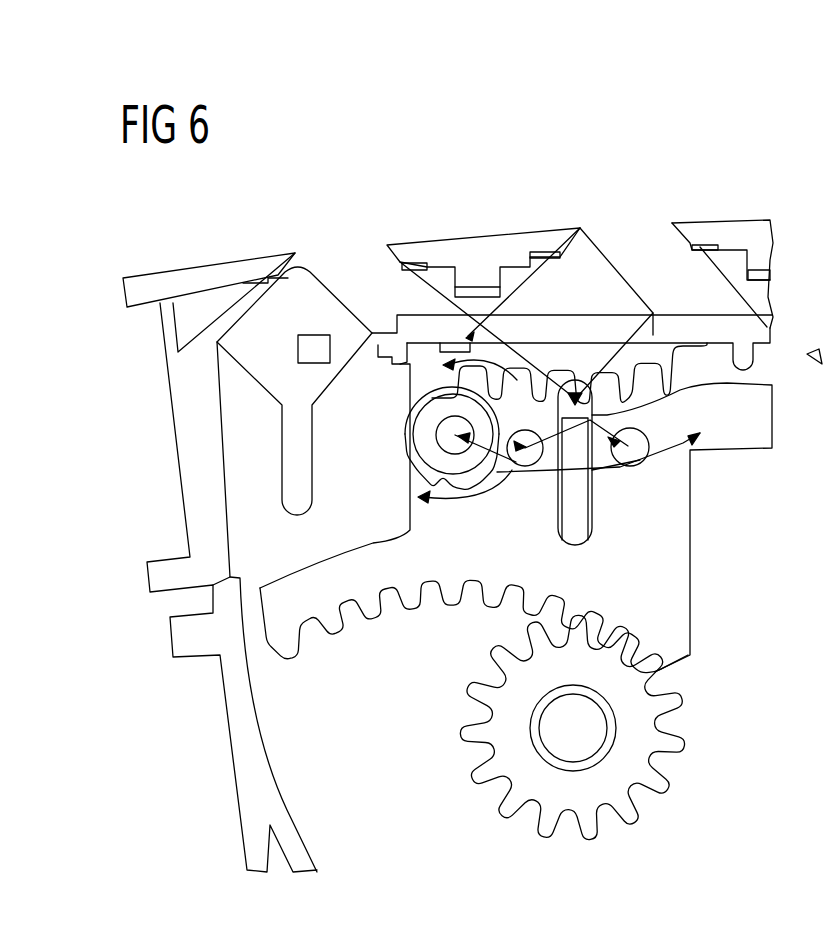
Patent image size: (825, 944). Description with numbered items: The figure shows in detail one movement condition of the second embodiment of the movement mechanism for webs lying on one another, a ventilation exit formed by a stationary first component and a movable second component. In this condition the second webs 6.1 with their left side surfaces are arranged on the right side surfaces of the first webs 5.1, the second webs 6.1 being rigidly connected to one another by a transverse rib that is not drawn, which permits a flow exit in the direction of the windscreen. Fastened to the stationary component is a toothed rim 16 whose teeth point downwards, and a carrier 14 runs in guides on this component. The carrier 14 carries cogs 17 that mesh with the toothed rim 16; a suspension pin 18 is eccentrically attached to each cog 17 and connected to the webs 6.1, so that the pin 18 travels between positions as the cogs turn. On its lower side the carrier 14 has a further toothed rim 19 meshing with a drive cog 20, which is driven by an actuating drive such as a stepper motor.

The second web 6.1 is at (307, 288).
The first web 5.1 is at (478, 258).
The carrier 14 is at (742, 432).
The toothed rim 16 is at (653, 362).
The cog 17 is at (407, 433).
The suspension pin 18 is at (530, 468).
The further toothed rim 19 is at (330, 638).
The drive cog 20 is at (663, 772).